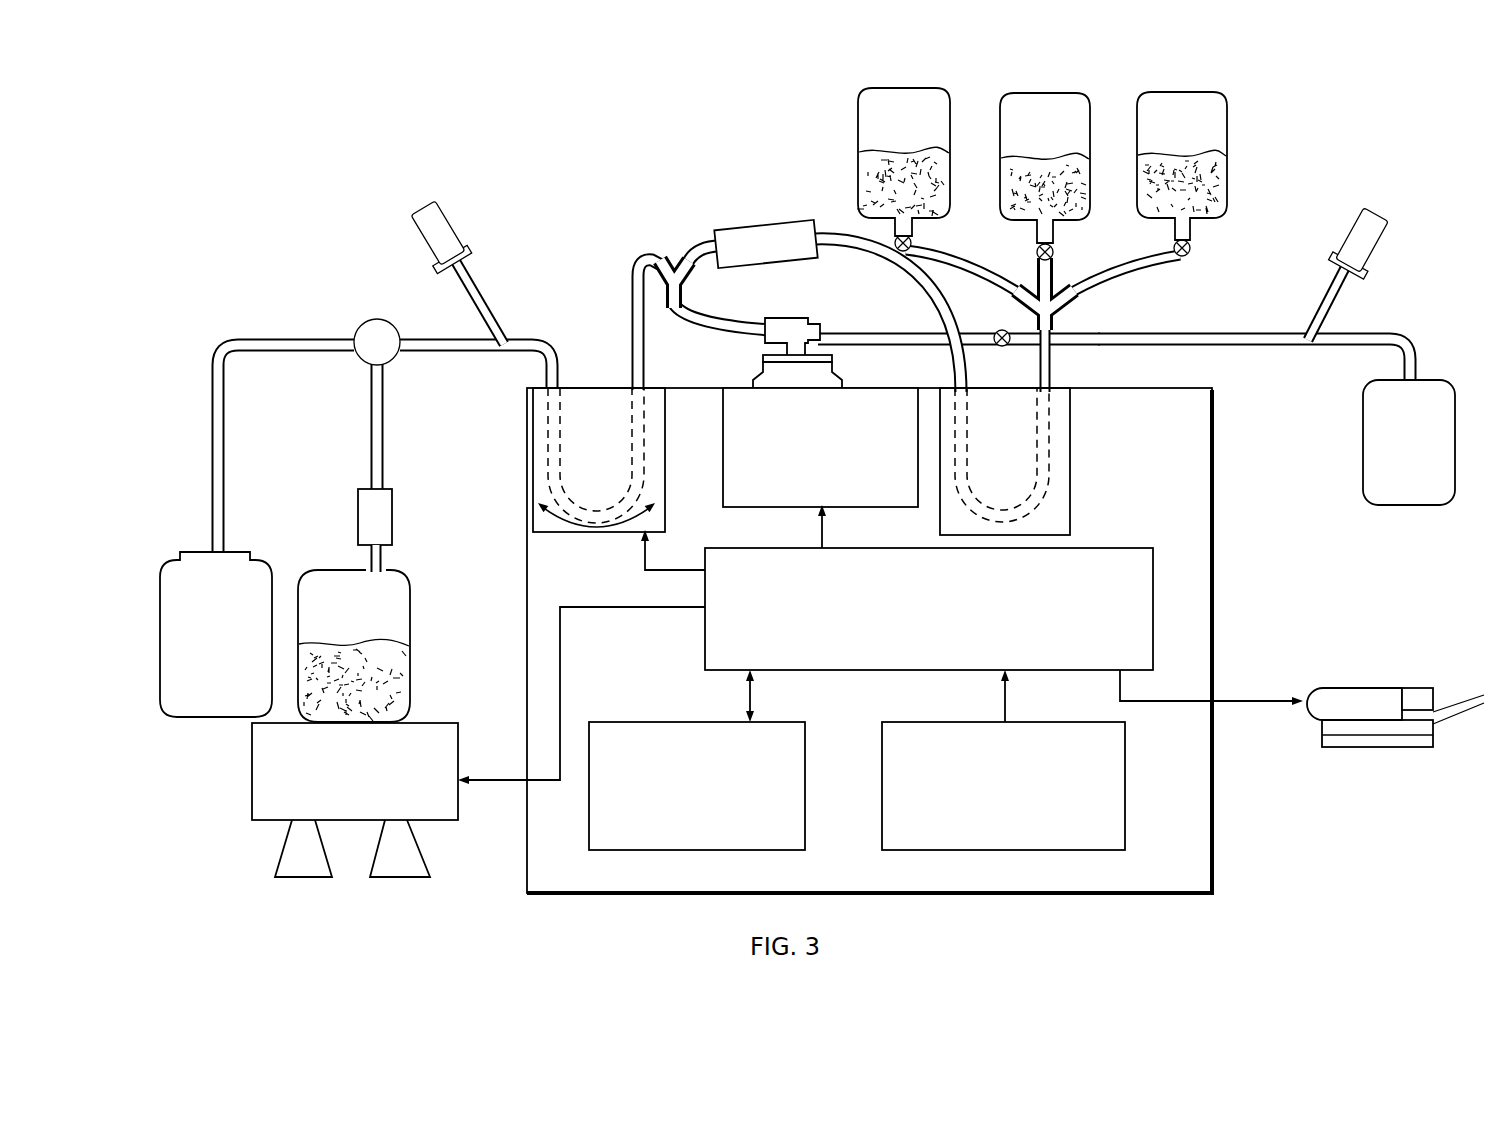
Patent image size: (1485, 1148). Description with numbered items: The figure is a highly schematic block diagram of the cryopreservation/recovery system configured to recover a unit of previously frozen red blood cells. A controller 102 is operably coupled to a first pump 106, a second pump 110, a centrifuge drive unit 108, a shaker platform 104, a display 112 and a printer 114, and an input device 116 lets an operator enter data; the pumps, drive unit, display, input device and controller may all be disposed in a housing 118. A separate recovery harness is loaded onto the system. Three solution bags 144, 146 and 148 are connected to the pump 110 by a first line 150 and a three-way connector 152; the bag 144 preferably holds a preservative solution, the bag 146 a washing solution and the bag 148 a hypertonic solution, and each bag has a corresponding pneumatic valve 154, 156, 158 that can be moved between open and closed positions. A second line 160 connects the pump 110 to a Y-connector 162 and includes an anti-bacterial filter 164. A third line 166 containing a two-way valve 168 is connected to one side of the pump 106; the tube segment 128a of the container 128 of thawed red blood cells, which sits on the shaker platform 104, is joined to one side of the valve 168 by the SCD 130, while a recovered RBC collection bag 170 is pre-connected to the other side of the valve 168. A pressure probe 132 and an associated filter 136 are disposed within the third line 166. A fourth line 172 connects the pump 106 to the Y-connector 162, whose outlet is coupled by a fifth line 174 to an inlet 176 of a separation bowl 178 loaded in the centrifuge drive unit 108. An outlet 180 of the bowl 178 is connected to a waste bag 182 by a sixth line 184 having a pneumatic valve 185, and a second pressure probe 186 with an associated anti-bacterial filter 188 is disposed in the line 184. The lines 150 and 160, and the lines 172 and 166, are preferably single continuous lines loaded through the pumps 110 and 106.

The controller 102 is at (1153, 608).
The shaker platform 104 is at (458, 800).
The first pump 106 is at (618, 532).
The centrifuge drive unit 108 is at (777, 507).
The second pump 110 is at (1070, 512).
The display screen 112 is at (668, 722).
The printer 114 is at (1420, 688).
The input device 116 is at (960, 722).
The housing 118 is at (1213, 880).
The container 128 is at (410, 640).
The tube segment 128a is at (387, 557).
The SCD 130 is at (392, 514).
The pressure probe 132 is at (443, 207).
The filter 136 is at (470, 252).
The solution bag 144 is at (857, 160).
The solution bag 146 is at (1038, 235).
The solution bag 148 is at (1227, 150).
The first line 150 is at (1052, 392).
The three-way connector 152 is at (1020, 294).
The pneumatic valve 154 is at (897, 238).
The pneumatic valve 156 is at (1055, 252).
The pneumatic valve 158 is at (1192, 248).
The second line 160 is at (900, 262).
The Y-connector 162 is at (673, 274).
The anti-bacterial filter 164 is at (753, 224).
The third line 166 is at (470, 353).
The two-way valve 168 is at (362, 322).
The recovered RBC collection bag 170 is at (237, 550).
The fourth line 172 is at (632, 310).
The fifth line 174 is at (722, 326).
The inlet 176 is at (765, 318).
The separation bowl 178 is at (755, 380).
The outlet 180 is at (827, 330).
The waste bag 182 is at (1428, 505).
The sixth line 184 is at (1400, 338).
The pneumatic valve 185 is at (1000, 346).
The second pressure probe 186 is at (1385, 222).
The anti-bacterial filter 188 is at (1368, 278).